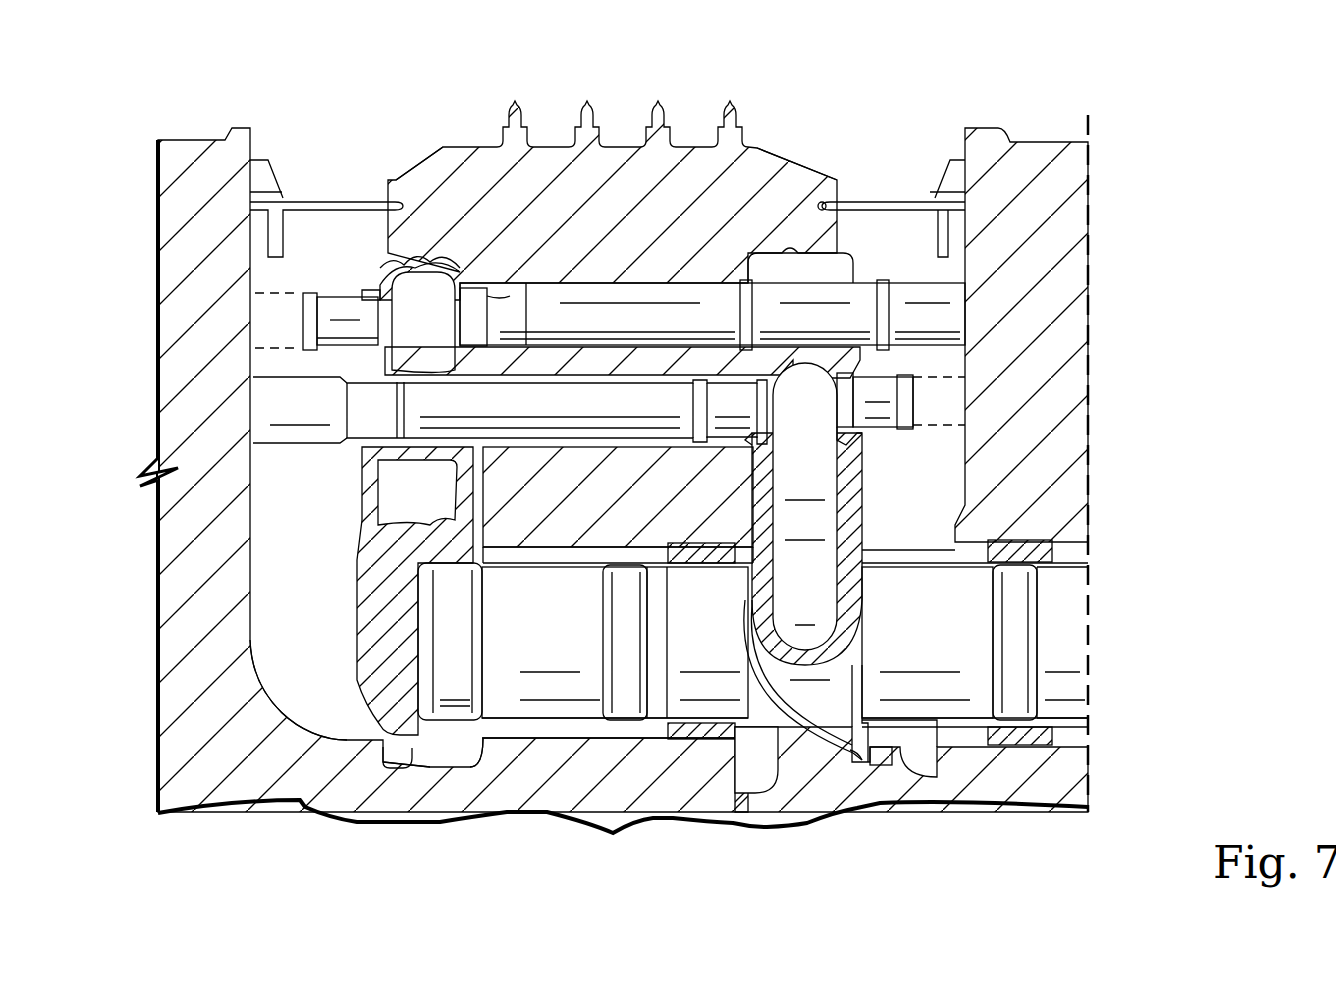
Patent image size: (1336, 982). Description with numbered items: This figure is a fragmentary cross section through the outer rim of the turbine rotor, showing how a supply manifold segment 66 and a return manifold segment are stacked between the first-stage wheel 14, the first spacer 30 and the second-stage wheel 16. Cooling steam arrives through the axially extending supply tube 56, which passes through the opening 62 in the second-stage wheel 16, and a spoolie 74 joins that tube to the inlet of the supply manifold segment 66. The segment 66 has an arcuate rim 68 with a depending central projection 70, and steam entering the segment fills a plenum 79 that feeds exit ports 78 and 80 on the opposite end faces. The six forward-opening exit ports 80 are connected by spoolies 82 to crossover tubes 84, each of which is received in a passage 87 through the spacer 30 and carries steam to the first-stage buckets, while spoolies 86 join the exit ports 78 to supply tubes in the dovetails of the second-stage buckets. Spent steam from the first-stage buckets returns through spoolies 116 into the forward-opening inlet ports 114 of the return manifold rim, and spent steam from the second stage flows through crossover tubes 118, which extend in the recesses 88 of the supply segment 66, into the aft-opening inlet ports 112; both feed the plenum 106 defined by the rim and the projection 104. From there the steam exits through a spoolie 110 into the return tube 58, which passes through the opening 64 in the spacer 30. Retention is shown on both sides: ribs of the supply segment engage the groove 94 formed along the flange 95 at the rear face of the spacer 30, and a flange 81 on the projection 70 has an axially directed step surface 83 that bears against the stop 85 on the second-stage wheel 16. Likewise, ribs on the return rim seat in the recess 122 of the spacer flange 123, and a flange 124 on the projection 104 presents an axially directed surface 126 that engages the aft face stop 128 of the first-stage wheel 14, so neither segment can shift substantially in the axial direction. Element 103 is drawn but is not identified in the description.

The first-stage wheel 14 is at (178, 220).
The second-stage wheel 16 is at (1053, 195).
The first spacer 30 is at (462, 152).
The thermal medium supply tube 56 is at (1060, 638).
The return tube 58 is at (660, 705).
The opening 62 is at (1070, 745).
The opening 64 is at (562, 730).
The supply manifold segment 66 is at (878, 468).
The arcuate rim 68 is at (850, 478).
The projection 70 is at (795, 693).
The spoolie 74 is at (938, 655).
The exit ports 78 is at (850, 430).
The plenum 79 is at (808, 588).
The exit ports 80 is at (750, 443).
The flange 81 is at (848, 758).
The spoolies 82 is at (723, 400).
The axially directed surface 83 is at (868, 745).
The crossover tubes 84 is at (558, 414).
The stop 85 is at (880, 760).
The spoolies 86 is at (893, 402).
The passage 87 is at (522, 447).
The recesses 88 is at (770, 270).
The groove 94 is at (806, 216).
The flange 95 is at (820, 205).
The step 103 is at (360, 285).
The projection 104 is at (378, 600).
The plenum 106 is at (405, 296).
The spoolie 110 is at (522, 688).
The inlet ports 112 is at (500, 300).
The inlet ports 114 is at (363, 343).
The spoolies 116 is at (322, 313).
The crossover tubes 118 is at (660, 318).
The recess 122 is at (392, 278).
The flange 123 is at (440, 197).
The flange 124 is at (385, 757).
The axially directed surface 126 is at (368, 730).
The stop 128 is at (385, 777).